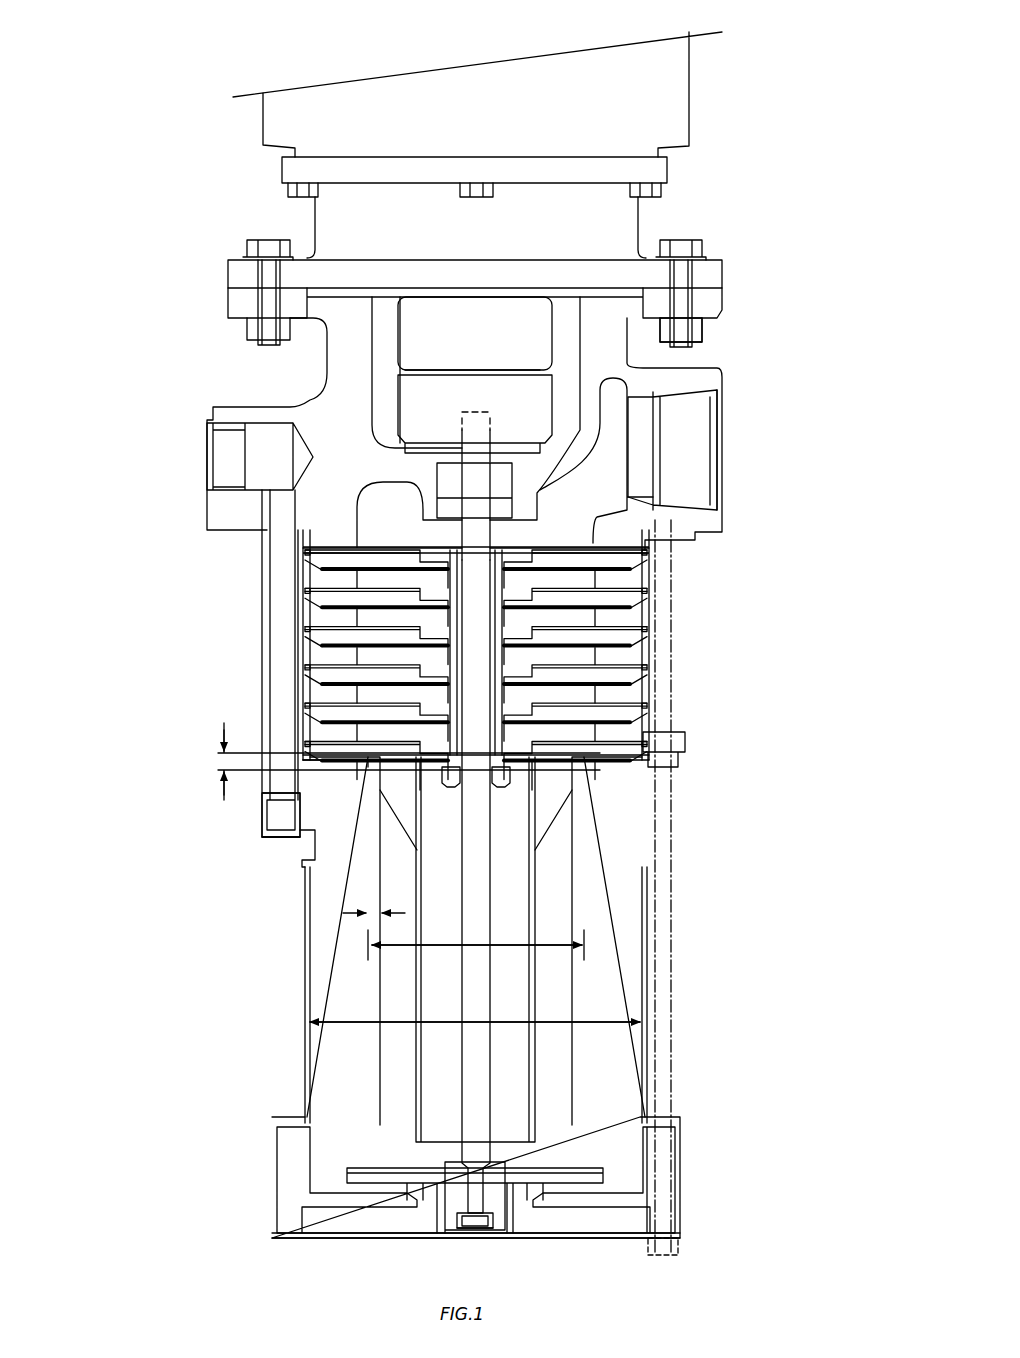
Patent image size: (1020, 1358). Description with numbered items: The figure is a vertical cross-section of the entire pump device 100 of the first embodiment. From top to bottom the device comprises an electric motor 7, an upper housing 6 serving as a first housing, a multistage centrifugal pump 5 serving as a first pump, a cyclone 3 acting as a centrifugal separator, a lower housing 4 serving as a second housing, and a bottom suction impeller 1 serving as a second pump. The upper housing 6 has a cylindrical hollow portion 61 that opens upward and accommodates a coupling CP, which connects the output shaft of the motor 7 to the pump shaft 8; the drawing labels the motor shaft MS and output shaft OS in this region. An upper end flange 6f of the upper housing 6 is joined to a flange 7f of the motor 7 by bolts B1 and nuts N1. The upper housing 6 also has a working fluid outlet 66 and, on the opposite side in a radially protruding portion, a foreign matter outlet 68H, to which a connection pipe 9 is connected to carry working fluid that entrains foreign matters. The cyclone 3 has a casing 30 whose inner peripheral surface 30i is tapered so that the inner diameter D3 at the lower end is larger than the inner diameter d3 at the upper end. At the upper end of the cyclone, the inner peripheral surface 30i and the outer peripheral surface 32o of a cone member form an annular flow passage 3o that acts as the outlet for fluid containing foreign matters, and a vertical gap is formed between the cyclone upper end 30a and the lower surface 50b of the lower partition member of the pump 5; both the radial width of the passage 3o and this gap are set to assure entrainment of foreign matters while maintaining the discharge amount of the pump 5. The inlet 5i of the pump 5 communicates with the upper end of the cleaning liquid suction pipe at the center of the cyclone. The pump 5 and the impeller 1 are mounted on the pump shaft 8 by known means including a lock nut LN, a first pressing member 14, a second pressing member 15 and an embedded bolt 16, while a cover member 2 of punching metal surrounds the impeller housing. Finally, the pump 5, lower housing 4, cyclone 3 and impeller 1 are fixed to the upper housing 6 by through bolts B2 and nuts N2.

The pump device 100 is at (158, 96).
The electric motor 7 is at (690, 100).
The coupling CP is at (440, 465).
The motor shaft MS is at (458, 425).
The output shaft OS is at (443, 465).
The bolts B1 is at (702, 240).
The flange 7f is at (722, 272).
The upper end flange 6f is at (722, 300).
The nuts N1 is at (702, 330).
The foreign matter outlet 68H is at (260, 490).
The cylindrical hollow portion 61 is at (590, 405).
The working fluid outlet 66 is at (690, 500).
The upper housing 6 is at (722, 515).
The inner peripheral surface 30i is at (318, 700).
The outer peripheral surface 32o is at (330, 720).
The connection pipe 9 is at (262, 680).
The lower surface 50b is at (350, 755).
The multistage centrifugal pump 5 is at (653, 550).
The annular flow passage 3o is at (370, 762).
The nuts N2 is at (680, 765).
The cyclone upper end 30a is at (300, 815).
The lower housing 4 is at (300, 855).
The inlet 5i is at (578, 760).
The lock nut LN is at (365, 880).
The pump shaft 8 is at (493, 868).
The inner diameter d3 is at (476, 942).
The first pressing member 14 is at (455, 1165).
The cyclone 3 is at (658, 940).
The inner diameter D3 is at (475, 1011).
The casing 30 is at (640, 985).
The bottom suction impeller 1 is at (300, 1167).
The cover member 2 is at (340, 1240).
The second pressing member 15 is at (455, 1240).
The embedded bolt 16 is at (490, 1235).
The through bolts B2 is at (678, 1255).